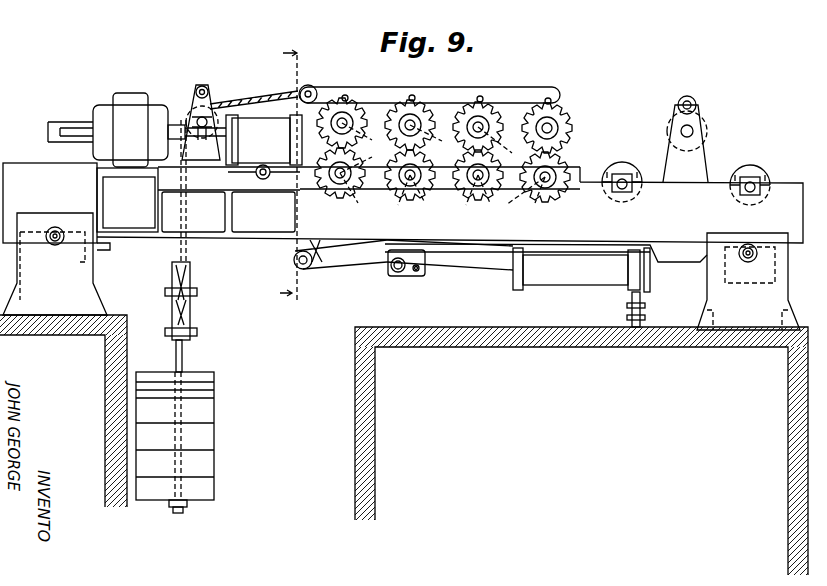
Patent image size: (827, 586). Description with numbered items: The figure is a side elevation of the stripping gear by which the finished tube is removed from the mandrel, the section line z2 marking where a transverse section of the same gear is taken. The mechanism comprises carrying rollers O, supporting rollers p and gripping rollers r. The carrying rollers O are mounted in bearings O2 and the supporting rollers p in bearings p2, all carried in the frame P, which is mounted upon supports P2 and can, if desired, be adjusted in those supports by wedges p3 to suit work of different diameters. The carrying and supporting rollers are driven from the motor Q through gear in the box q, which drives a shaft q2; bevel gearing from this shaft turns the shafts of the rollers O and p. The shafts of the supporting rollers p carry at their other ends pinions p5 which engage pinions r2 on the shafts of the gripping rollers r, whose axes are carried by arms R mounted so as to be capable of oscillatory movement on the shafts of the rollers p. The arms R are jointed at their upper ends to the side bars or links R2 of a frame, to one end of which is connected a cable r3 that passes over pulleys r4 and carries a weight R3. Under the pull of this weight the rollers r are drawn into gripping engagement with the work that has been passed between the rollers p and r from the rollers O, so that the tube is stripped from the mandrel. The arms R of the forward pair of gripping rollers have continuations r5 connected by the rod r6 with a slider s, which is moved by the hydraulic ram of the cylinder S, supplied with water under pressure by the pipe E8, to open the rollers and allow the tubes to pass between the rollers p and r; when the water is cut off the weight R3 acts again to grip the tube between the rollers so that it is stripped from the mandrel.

The frame P is at (403, 212).
The supports P2 is at (401, 271).
The wedges p3 is at (80, 250).
The motor Q is at (116, 130).
The gear box q is at (243, 140).
The shaft q2 is at (262, 180).
The gripping rollers r is at (429, 140).
The pinions r2 is at (455, 125).
The cable r3 is at (236, 105).
The pulleys r4 is at (192, 95).
The continuations r5 is at (322, 262).
The rod r6 is at (357, 262).
The arms R is at (556, 98).
The side bars or links R2 is at (314, 88).
The weight R3 is at (187, 442).
The supporting rollers p is at (442, 196).
The bearings p2 is at (585, 163).
The pinions p5 is at (442, 181).
The carrying rollers O is at (686, 174).
The bearings O2 is at (626, 188).
The slider s is at (410, 276).
The cylinder S is at (581, 270).
The pipe E8 is at (649, 309).
The section line z2 is at (293, 174).